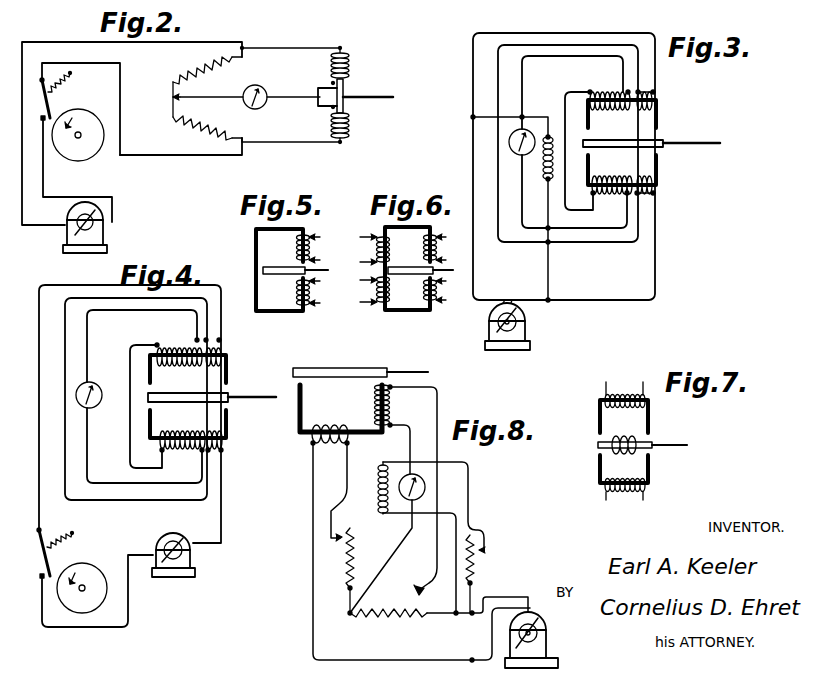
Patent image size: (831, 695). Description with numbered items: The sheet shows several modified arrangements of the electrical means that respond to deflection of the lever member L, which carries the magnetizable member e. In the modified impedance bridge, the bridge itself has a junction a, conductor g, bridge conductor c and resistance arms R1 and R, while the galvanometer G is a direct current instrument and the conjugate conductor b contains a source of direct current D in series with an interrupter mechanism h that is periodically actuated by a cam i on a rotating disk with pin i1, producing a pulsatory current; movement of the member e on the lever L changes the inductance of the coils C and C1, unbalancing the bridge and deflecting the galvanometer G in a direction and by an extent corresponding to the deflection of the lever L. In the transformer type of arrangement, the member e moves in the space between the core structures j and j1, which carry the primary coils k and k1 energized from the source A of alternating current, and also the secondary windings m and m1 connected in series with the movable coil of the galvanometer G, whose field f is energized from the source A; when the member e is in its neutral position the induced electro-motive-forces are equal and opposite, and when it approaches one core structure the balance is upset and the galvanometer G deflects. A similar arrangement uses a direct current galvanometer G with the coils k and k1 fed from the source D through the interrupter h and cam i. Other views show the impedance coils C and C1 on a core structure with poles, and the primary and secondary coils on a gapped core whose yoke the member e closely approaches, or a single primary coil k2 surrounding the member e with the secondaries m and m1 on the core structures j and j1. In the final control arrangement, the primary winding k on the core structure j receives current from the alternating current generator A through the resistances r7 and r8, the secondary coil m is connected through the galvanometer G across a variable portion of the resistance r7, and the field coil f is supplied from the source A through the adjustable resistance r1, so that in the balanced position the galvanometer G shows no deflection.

In FIG. 2, the conjugate conductor b is at (125, 45).
In FIG. 2, the junction point a is at (182, 98).
In FIG. 2, the resistance R1 is at (205, 72).
In FIG. 2, the resistance R is at (218, 120).
In FIG. 2, the conductor g is at (180, 100).
In FIG. 2, the conductor c is at (232, 95).
In FIG. 2, the galvanometer G is at (262, 86).
In FIG. 3, the galvanometer G is at (518, 158).
In FIG. 4, the galvanometer G is at (96, 383).
In FIG. 8, the galvanometer G is at (425, 487).
In FIG. 2, the impedance coil C1 is at (350, 58).
In FIG. 5, the impedance coil C1 is at (318, 248).
In FIG. 2, the impedance coil C is at (350, 128).
In FIG. 5, the impedance coil C is at (314, 292).
In FIG. 2, the magnetizable member e is at (340, 92).
In FIG. 3, the magnetizable member e is at (625, 140).
In FIG. 4, the magnetizable member e is at (192, 393).
In FIG. 5, the magnetizable member e is at (282, 267).
In FIG. 6, the magnetizable member e is at (412, 267).
In FIG. 7, the magnetizable member e is at (597, 446).
In FIG. 8, the magnetizable member e is at (355, 368).
In FIG. 2, the lever member L is at (368, 94).
In FIG. 3, the lever member L is at (690, 141).
In FIG. 4, the lever member L is at (250, 395).
In FIG. 5, the lever member L is at (318, 269).
In FIG. 6, the lever member L is at (447, 270).
In FIG. 7, the lever member L is at (676, 442).
In FIG. 8, the lever member L is at (410, 371).
In FIG. 2, the interrupter mechanism h is at (58, 108).
In FIG. 4, the interrupter mechanism h is at (40, 570).
In FIG. 2, the cam i is at (62, 112).
In FIG. 4, the cam i is at (62, 568).
In FIG. 2, the contact pin i1 is at (80, 138).
In FIG. 4, the contact pin i1 is at (84, 586).
In FIG. 2, the source of direct current D is at (103, 233).
In FIG. 4, the source of direct current D is at (191, 560).
In FIG. 3, the secondary winding m1 is at (606, 92).
In FIG. 4, the secondary winding m1 is at (176, 348).
In FIG. 6, the secondary winding m1 is at (372, 250).
In FIG. 7, the secondary winding m1 is at (622, 394).
In FIG. 3, the primary coil k1 is at (650, 92).
In FIG. 4, the primary coil k1 is at (212, 345).
In FIG. 6, the primary coil k1 is at (438, 249).
In FIG. 3, the core structure j1 is at (658, 112).
In FIG. 4, the core structure j1 is at (228, 370).
In FIG. 7, the core structure j1 is at (598, 420).
In FIG. 3, the primary coil k is at (644, 176).
In FIG. 4, the primary coil k is at (214, 450).
In FIG. 6, the primary coil k is at (440, 292).
In FIG. 8, the primary coil k is at (322, 447).
In FIG. 3, the core structure j is at (658, 172).
In FIG. 4, the core structure j is at (228, 428).
In FIG. 7, the core structure j is at (650, 468).
In FIG. 8, the core structure j is at (358, 428).
In FIG. 3, the secondary winding m is at (610, 194).
In FIG. 4, the secondary winding m is at (183, 431).
In FIG. 6, the secondary winding m is at (376, 290).
In FIG. 7, the secondary winding m is at (624, 492).
In FIG. 8, the secondary winding m is at (392, 405).
In FIG. 3, the field coil f is at (541, 182).
In FIG. 8, the field coil f is at (378, 487).
In FIG. 3, the source of alternating current A is at (525, 330).
In FIG. 8, the source of alternating current A is at (546, 642).
In FIG. 7, the single primary coil k2 is at (625, 435).
In FIG. 8, the variable resistance r8 is at (354, 553).
In FIG. 8, the resistance r7 is at (398, 620).
In FIG. 8, the adjustable resistance r1 is at (474, 568).